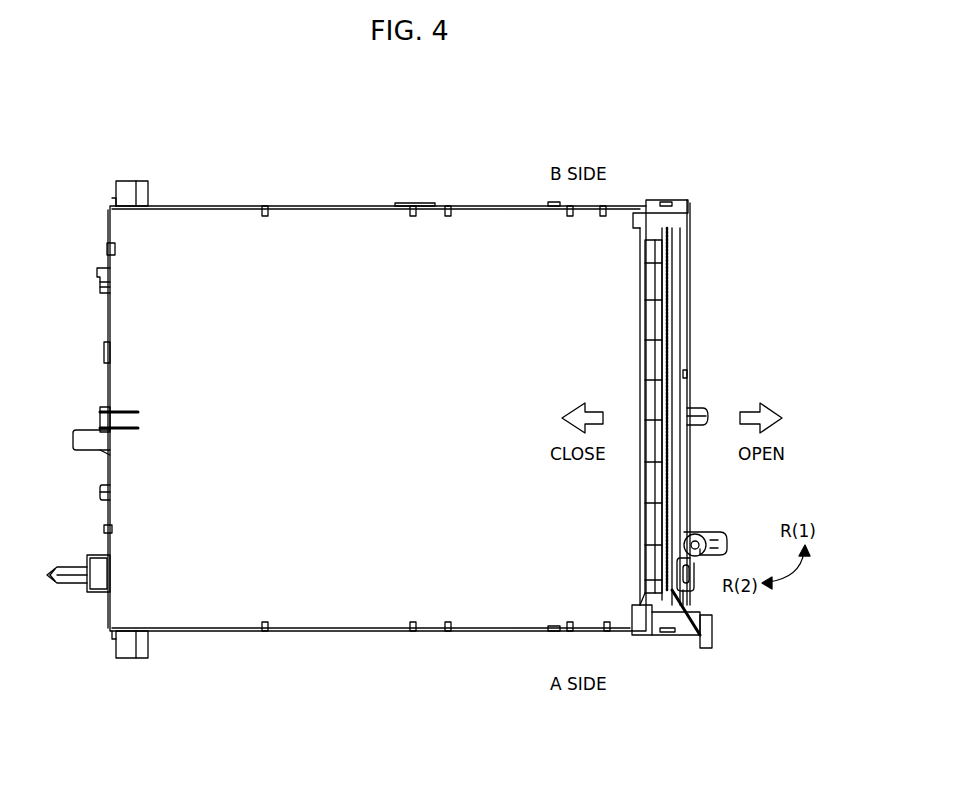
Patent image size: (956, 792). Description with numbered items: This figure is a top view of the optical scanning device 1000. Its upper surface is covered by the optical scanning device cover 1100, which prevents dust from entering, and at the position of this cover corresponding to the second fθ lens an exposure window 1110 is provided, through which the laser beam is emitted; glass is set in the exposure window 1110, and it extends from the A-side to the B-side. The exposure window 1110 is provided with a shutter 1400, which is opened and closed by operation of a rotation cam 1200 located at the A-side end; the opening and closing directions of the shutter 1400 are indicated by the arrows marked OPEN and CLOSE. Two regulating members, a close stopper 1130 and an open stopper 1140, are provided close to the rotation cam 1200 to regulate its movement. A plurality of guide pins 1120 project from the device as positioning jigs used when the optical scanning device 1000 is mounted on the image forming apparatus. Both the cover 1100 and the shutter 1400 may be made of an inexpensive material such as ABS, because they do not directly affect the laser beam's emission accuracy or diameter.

The optical scanning device 1000 is at (657, 140).
The optical scanning device cover 1100 is at (300, 225).
The exposure window 1110 is at (662, 316).
The guide pin 1120 is at (57, 580).
The close stopper 1130 is at (655, 622).
The open stopper 1140 is at (689, 592).
The rotation cam 1200 is at (704, 518).
The shutter 1400 is at (680, 358).